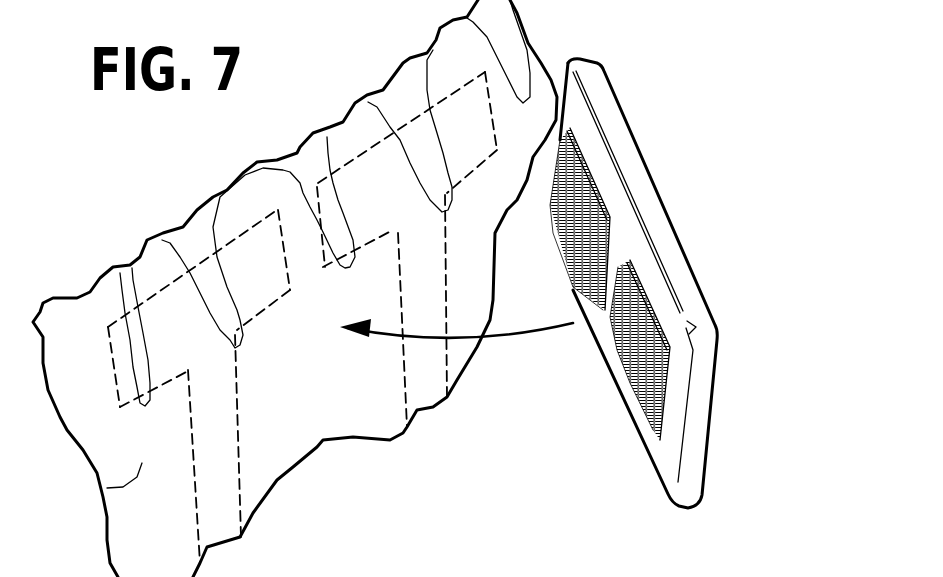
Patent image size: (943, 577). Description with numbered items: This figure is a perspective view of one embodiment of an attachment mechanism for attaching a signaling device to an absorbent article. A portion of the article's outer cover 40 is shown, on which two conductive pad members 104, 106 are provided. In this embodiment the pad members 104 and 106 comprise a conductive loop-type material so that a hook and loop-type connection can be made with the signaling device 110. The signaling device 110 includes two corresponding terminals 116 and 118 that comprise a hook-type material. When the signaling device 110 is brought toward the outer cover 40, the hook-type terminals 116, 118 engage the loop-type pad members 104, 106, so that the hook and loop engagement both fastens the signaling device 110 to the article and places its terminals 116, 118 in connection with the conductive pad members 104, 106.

The outer cover 40 is at (100, 487).
The pad member 104 is at (150, 295).
The pad member 106 is at (488, 90).
The signaling device 110 is at (697, 407).
The terminal 116 is at (657, 312).
The terminal 118 is at (600, 200).